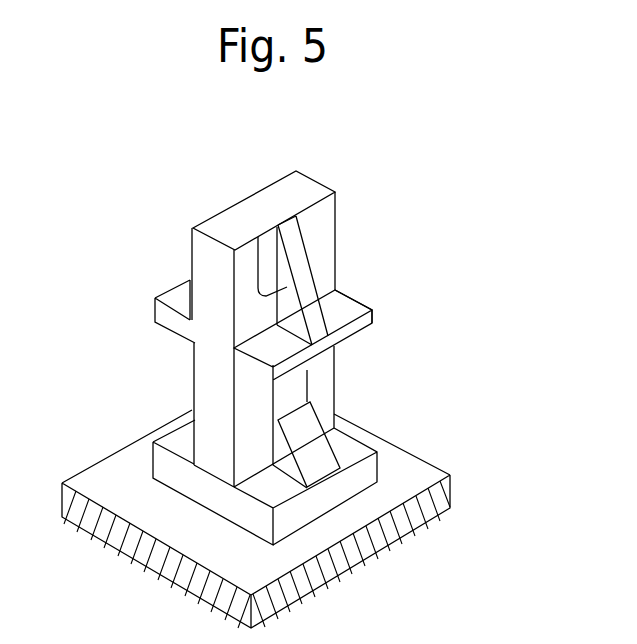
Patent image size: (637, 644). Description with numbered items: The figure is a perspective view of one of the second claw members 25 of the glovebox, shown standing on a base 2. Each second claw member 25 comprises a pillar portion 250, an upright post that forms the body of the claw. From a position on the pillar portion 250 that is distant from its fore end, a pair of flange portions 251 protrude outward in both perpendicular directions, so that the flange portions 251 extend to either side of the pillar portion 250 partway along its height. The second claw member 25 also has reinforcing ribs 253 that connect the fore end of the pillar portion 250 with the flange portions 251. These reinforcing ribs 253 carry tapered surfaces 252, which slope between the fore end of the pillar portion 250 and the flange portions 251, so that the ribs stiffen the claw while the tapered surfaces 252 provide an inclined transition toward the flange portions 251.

The base member 2 is at (417, 472).
The second claw member 25 is at (246, 294).
The pillar portion 250 is at (210, 377).
The flange portions 251 is at (175, 289).
The tapered surfaces 252 is at (300, 250).
The reinforcing ribs 253 is at (258, 237).